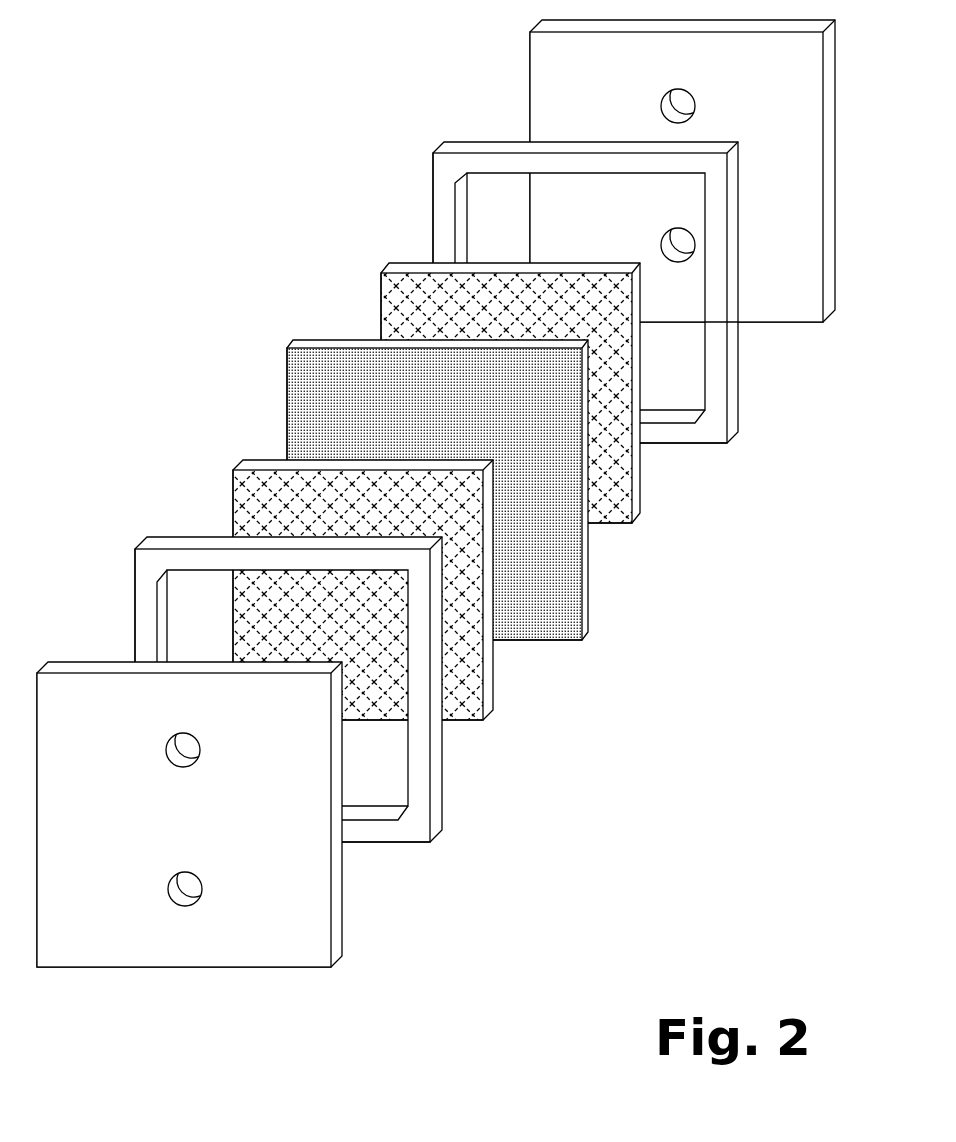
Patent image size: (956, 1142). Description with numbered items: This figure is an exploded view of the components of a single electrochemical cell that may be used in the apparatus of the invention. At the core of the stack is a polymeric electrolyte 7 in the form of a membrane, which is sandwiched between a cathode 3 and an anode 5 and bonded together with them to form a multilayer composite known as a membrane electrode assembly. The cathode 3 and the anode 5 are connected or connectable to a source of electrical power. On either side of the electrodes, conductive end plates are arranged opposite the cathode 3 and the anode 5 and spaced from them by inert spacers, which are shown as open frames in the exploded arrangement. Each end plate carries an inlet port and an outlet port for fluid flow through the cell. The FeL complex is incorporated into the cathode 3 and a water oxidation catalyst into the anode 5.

The cathode 3 is at (460, 729).
The anode 5 is at (610, 533).
The polymeric electrolyte 7 is at (535, 653).